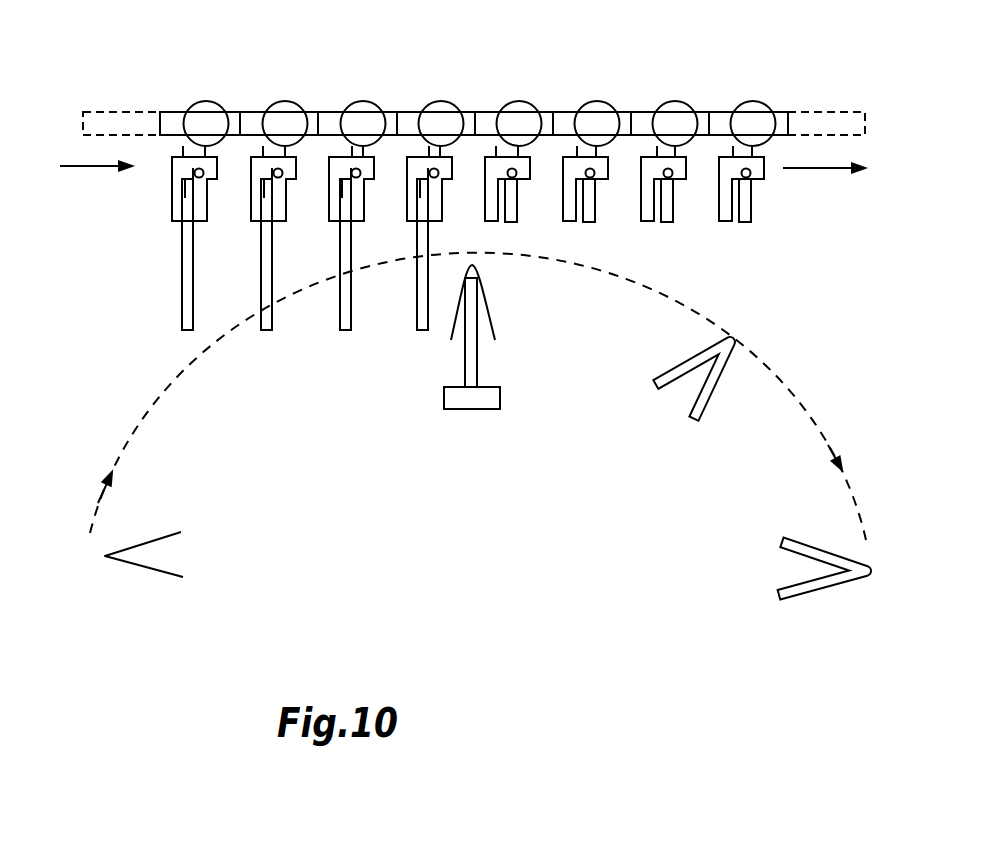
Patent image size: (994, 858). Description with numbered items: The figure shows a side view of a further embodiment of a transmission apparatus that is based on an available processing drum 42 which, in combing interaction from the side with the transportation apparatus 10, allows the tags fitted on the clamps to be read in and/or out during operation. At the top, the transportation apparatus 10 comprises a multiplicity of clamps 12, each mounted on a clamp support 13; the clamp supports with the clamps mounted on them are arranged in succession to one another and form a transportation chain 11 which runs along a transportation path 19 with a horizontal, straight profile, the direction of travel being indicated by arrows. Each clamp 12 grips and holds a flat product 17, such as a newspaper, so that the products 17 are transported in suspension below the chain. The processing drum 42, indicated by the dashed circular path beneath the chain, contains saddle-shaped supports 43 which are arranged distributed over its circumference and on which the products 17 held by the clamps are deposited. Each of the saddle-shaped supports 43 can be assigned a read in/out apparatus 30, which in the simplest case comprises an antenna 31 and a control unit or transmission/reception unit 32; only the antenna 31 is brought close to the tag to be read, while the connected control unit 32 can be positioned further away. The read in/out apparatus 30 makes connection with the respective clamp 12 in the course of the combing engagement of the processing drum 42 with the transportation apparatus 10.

The transportation apparatus 10 is at (185, 77).
The transportation chain 11 is at (820, 128).
The clamp 12 is at (422, 168).
The clamp support 13 is at (405, 113).
The flat product 17 is at (422, 310).
The transportation path 19 is at (817, 170).
The read in/out apparatus 30 is at (417, 416).
The antenna 31 is at (472, 356).
The control unit 32 is at (477, 400).
The processing drum 42 is at (698, 531).
The saddle-shaped support 43 is at (153, 560).